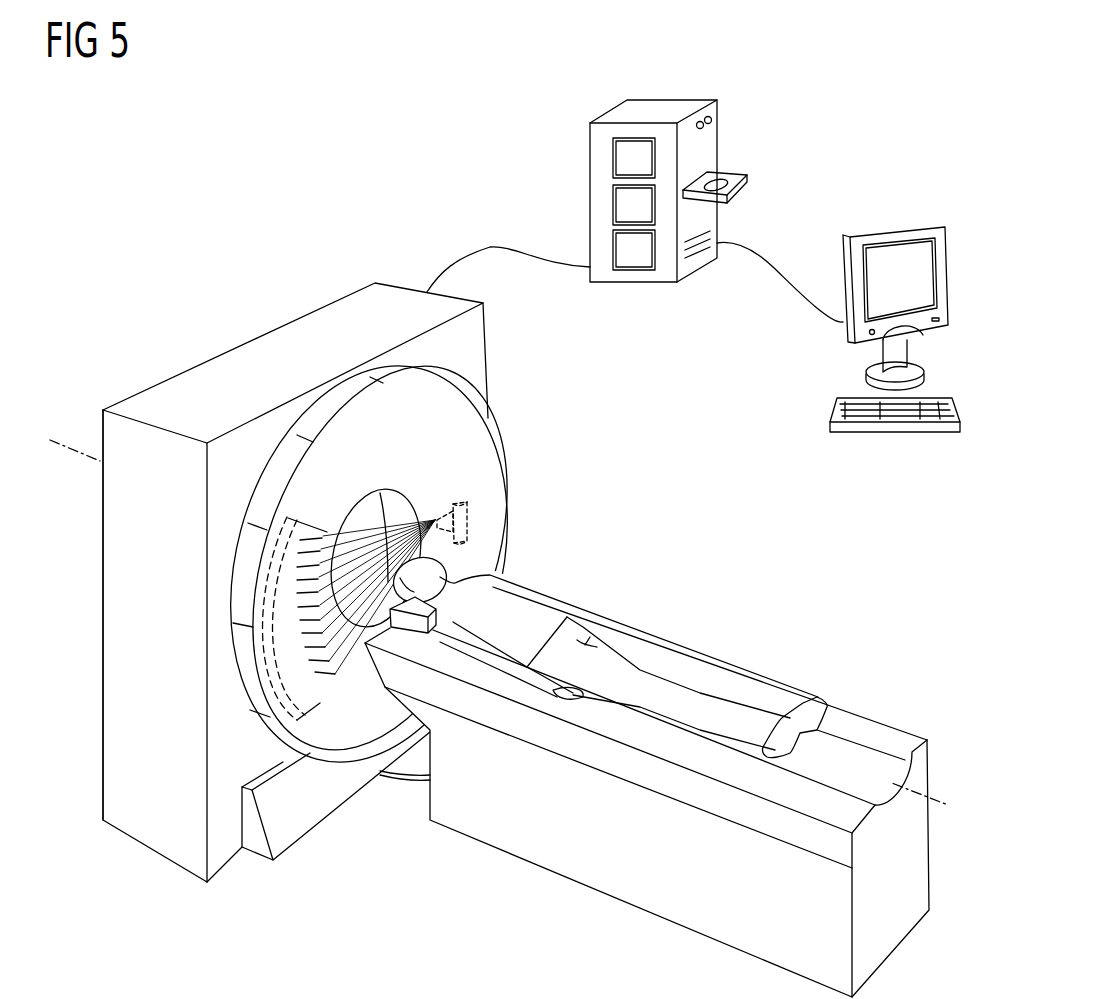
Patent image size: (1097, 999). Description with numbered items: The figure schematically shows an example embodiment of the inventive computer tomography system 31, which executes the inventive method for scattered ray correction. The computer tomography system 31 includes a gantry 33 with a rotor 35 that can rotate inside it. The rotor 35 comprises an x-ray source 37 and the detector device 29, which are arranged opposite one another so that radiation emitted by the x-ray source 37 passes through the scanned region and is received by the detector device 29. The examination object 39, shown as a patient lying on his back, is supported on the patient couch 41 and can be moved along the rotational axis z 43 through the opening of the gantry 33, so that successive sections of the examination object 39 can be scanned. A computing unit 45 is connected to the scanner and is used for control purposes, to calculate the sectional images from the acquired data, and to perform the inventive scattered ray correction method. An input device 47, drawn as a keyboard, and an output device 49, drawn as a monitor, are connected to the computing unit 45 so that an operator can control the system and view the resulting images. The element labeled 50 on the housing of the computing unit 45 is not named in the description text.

The detector device 29 is at (307, 695).
The computer tomography system 31 is at (78, 678).
The gantry 33 is at (262, 316).
The rotor 35 is at (467, 465).
The x-ray source 37 is at (477, 527).
The examination object 39 is at (528, 628).
The patient couch 41 is at (775, 690).
The rotational axis z 43 is at (100, 461).
The computing unit 45 is at (653, 113).
The input device 47 is at (830, 425).
The output device 49 is at (920, 230).
The data storage / drive bays 50 is at (613, 160).